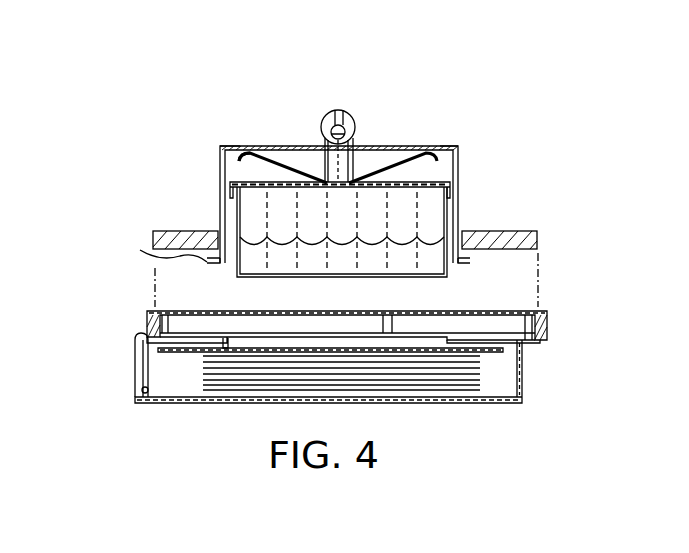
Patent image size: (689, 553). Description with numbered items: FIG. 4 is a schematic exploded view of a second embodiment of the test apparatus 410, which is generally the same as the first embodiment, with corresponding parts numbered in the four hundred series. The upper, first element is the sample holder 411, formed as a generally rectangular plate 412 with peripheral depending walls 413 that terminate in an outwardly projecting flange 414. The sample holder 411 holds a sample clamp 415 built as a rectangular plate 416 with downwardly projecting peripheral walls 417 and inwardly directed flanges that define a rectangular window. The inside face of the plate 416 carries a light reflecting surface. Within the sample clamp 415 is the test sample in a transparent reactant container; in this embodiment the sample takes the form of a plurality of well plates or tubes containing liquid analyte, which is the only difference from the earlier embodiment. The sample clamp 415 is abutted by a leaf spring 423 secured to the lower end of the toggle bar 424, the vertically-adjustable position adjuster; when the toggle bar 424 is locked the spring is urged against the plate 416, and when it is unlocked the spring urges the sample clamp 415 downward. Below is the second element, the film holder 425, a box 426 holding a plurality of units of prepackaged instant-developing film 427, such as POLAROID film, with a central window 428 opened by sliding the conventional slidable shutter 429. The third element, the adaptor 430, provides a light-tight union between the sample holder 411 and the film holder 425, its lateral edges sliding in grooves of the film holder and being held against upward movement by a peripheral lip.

The test apparatus 410 is at (297, 85).
The sample holder 411 is at (218, 147).
The rectangular plate 412 is at (270, 147).
The peripheral depending walls 413 is at (458, 153).
The outwardly projecting flange 414 is at (153, 260).
The sample clamp 415 is at (437, 181).
The rectangular plate 416 is at (240, 172).
The downwardly projecting peripheral walls 417 is at (228, 190).
The leaf spring 423 is at (407, 157).
The toggle bar 424 is at (383, 97).
The film holder 425 is at (136, 372).
The box 426 is at (187, 403).
The prepackaged instant-developing film 427 is at (480, 357).
The central window 428 is at (313, 338).
The slidable shutter 429 is at (437, 340).
The adaptor 430 is at (538, 240).